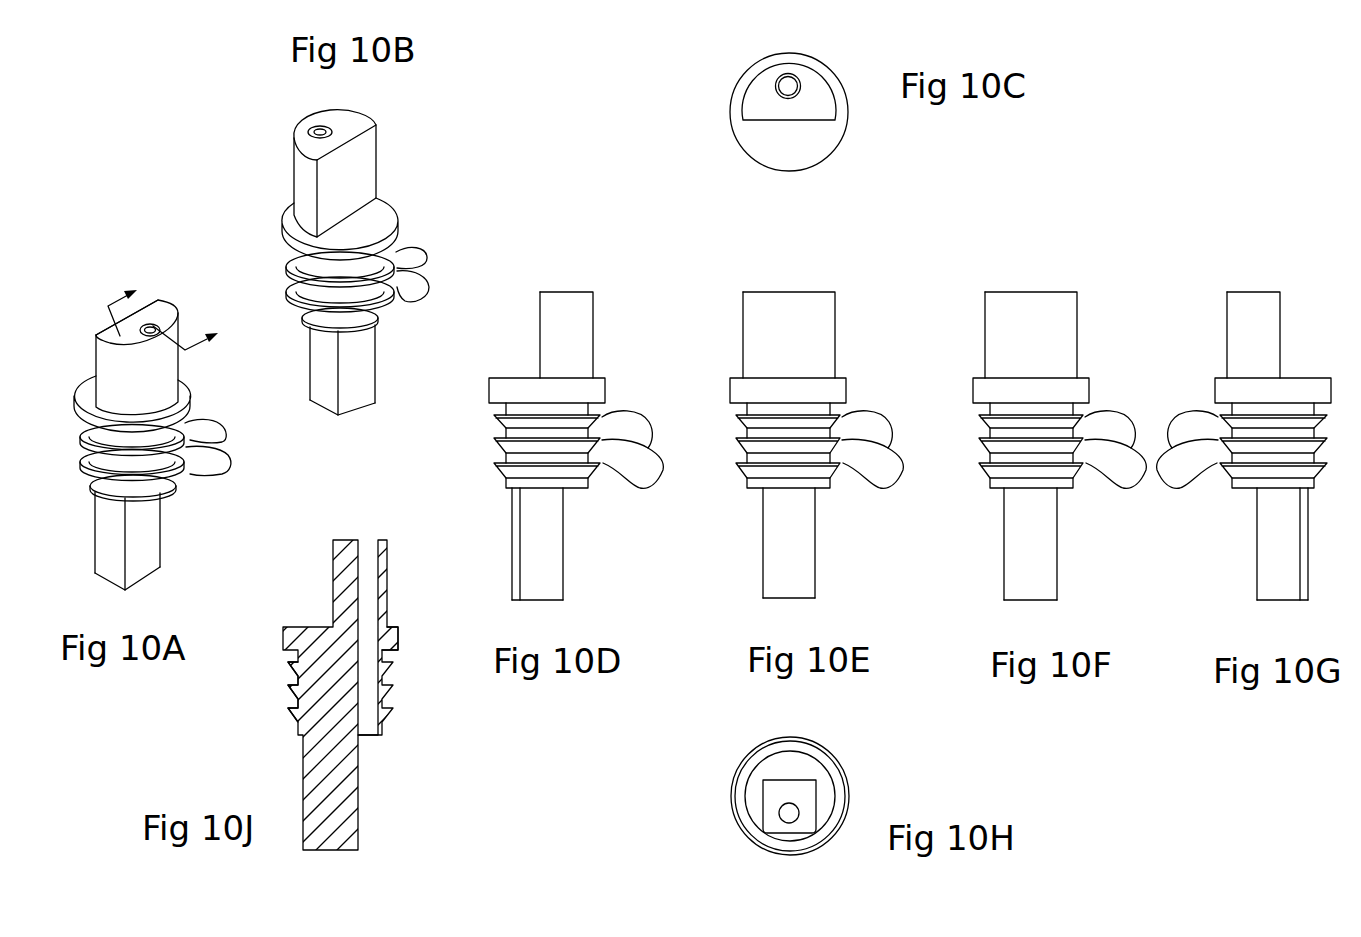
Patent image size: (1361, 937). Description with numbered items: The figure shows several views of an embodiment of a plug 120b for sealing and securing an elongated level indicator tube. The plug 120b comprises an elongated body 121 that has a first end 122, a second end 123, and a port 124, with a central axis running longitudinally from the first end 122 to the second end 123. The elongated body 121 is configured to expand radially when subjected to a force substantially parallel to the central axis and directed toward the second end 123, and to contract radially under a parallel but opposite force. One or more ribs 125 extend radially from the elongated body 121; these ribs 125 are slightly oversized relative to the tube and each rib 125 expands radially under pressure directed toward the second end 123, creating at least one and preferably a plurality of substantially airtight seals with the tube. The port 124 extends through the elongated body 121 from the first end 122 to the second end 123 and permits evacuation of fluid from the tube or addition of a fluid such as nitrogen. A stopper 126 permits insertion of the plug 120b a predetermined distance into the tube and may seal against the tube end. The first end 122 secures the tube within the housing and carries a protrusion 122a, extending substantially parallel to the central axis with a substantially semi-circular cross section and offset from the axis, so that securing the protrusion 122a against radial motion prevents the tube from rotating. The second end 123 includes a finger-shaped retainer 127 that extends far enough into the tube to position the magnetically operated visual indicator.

In FIG. 10A, the plug 120b is at (173, 285).
In FIG. 10B, the plug 120b is at (413, 165).
In FIG. 10C, the plug 120b is at (712, 72).
In FIG. 10D, the plug 120b is at (556, 258).
In FIG. 10E, the plug 120b is at (755, 269).
In FIG. 10F, the plug 120b is at (1010, 260).
In FIG. 10G, the plug 120b is at (1226, 262).
In FIG. 10J, the plug 120b is at (375, 811).
In FIG. 10H, the plug 120b is at (725, 745).
In FIG. 10A, the elongated body 121 is at (108, 357).
In FIG. 10B, the elongated body 121 is at (320, 210).
In FIG. 10D, the elongated body 121 is at (548, 355).
In FIG. 10E, the elongated body 121 is at (758, 307).
In FIG. 10F, the elongated body 121 is at (998, 355).
In FIG. 10G, the elongated body 121 is at (1237, 352).
In FIG. 10A, the first end 122 is at (117, 332).
In FIG. 10B, the first end 122 is at (358, 125).
In FIG. 10D, the first end 122 is at (567, 292).
In FIG. 10E, the first end 122 is at (807, 292).
In FIG. 10F, the first end 122 is at (1055, 292).
In FIG. 10G, the first end 122 is at (1258, 292).
In FIG. 10A, the protrusion 122a is at (153, 378).
In FIG. 10B, the protrusion 122a is at (348, 182).
In FIG. 10A, the second end 123 is at (142, 580).
In FIG. 10B, the second end 123 is at (357, 415).
In FIG. 10D, the second end 123 is at (542, 600).
In FIG. 10E, the second end 123 is at (778, 598).
In FIG. 10F, the second end 123 is at (1043, 600).
In FIG. 10G, the second end 123 is at (1285, 600).
In FIG. 10A, the port 124 is at (153, 328).
In FIG. 10B, the port 124 is at (317, 125).
In FIG. 10C, the port 124 is at (790, 86).
In FIG. 10J, the port 124 is at (368, 735).
In FIG. 10H, the port 124 is at (789, 813).
In FIG. 10A, the ribs 125 is at (224, 456).
In FIG. 10B, the ribs 125 is at (393, 267).
In FIG. 10D, the ribs 125 is at (663, 472).
In FIG. 10E, the ribs 125 is at (903, 470).
In FIG. 10F, the ribs 125 is at (1146, 470).
In FIG. 10G, the ribs 125 is at (1172, 480).
In FIG. 10J, the ribs 125 is at (288, 709).
In FIG. 10A, the stopper 126 is at (187, 383).
In FIG. 10B, the stopper 126 is at (292, 207).
In FIG. 10D, the stopper 126 is at (593, 390).
In FIG. 10E, the stopper 126 is at (837, 393).
In FIG. 10F, the stopper 126 is at (1078, 390).
In FIG. 10G, the stopper 126 is at (1307, 387).
In FIG. 10J, the stopper 126 is at (393, 638).
In FIG. 10A, the finger-shaped retainer 127 is at (155, 532).
In FIG. 10B, the finger-shaped retainer 127 is at (368, 353).
In FIG. 10D, the finger-shaped retainer 127 is at (552, 543).
In FIG. 10E, the finger-shaped retainer 127 is at (802, 555).
In FIG. 10F, the finger-shaped retainer 127 is at (1017, 555).
In FIG. 10G, the finger-shaped retainer 127 is at (1270, 572).